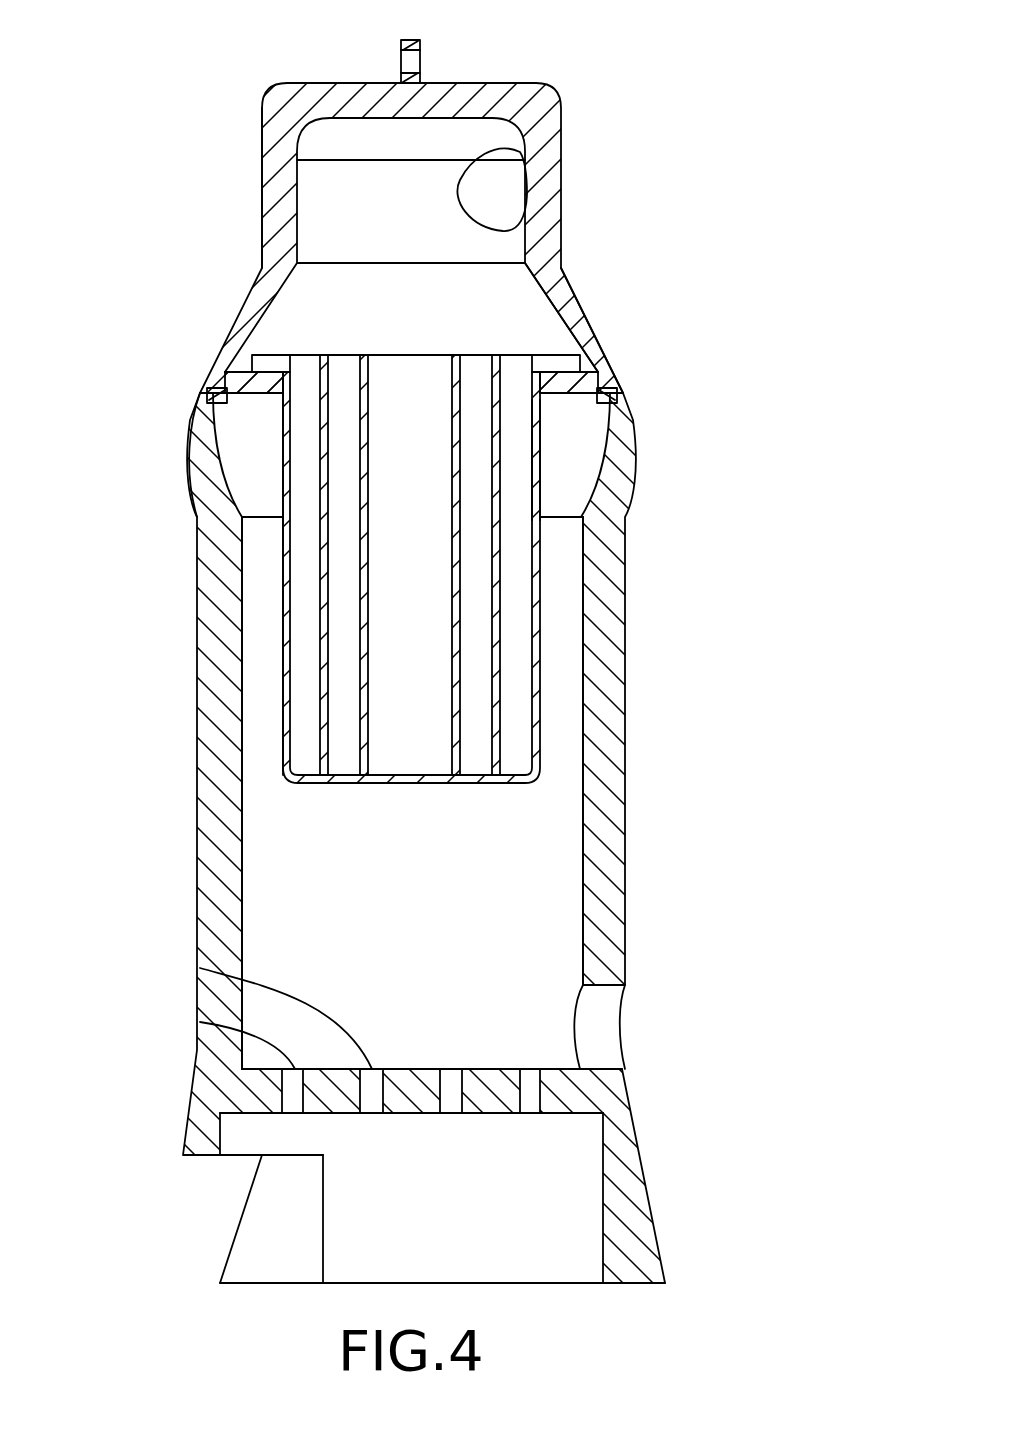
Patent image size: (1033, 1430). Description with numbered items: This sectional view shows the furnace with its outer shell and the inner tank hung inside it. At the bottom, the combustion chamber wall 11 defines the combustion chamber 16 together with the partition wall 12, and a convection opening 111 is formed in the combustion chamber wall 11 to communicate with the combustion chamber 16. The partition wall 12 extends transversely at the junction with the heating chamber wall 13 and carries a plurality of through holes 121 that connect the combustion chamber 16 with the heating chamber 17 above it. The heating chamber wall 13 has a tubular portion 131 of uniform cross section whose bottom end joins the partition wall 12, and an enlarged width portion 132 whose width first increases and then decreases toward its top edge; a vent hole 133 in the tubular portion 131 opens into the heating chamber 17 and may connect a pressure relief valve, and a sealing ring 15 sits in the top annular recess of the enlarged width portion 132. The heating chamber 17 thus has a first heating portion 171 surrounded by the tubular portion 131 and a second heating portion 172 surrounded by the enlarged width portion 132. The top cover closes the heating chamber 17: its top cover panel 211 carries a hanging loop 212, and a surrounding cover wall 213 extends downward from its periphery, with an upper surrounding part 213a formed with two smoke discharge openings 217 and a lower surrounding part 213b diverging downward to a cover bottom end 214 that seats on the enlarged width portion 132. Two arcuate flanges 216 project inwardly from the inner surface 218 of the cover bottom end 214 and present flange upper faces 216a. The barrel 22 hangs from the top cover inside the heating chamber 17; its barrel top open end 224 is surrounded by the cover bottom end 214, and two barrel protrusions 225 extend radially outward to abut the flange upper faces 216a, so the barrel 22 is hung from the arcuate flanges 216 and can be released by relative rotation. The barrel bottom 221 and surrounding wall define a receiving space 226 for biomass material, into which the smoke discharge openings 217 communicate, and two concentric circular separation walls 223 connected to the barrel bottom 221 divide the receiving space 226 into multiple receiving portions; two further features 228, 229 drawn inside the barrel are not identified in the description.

The combustion chamber wall 11 is at (630, 1150).
The convection opening 111 is at (235, 1235).
The partition wall 12 is at (500, 1097).
The through holes 121 is at (200, 968).
The heating chamber wall 13 is at (205, 800).
The tubular portion 131 is at (205, 642).
The enlarged width portion 132 is at (193, 465).
The vent hole 133 is at (598, 1017).
The sealing ring 15 is at (617, 398).
The combustion chamber 16 is at (575, 1250).
The heating chamber 17 is at (567, 797).
The first heating portion 171 is at (540, 925).
The second heating portion 172 is at (572, 468).
The top cover panel 211 is at (353, 93).
The hanging loop 212 is at (422, 42).
The surrounding cover wall 213 is at (612, 181).
The upper surrounding part 213a is at (272, 158).
The lower surrounding part 213b is at (553, 345).
The cover bottom end 214 is at (603, 378).
The arcuate flanges 216 is at (255, 380).
The flange upper faces 216a is at (253, 382).
The smoke discharge openings 217 is at (498, 167).
The inner surface 218 is at (563, 308).
The barrel 22 is at (540, 558).
The barrel bottom 221 is at (472, 780).
The separation walls 223 is at (496, 680).
The barrel top open end 224 is at (384, 343).
The barrel protrusions 225 is at (247, 372).
The receiving space 226 is at (515, 458).
The partition tube wall 228 is at (343, 543).
The central channel 229 is at (385, 593).